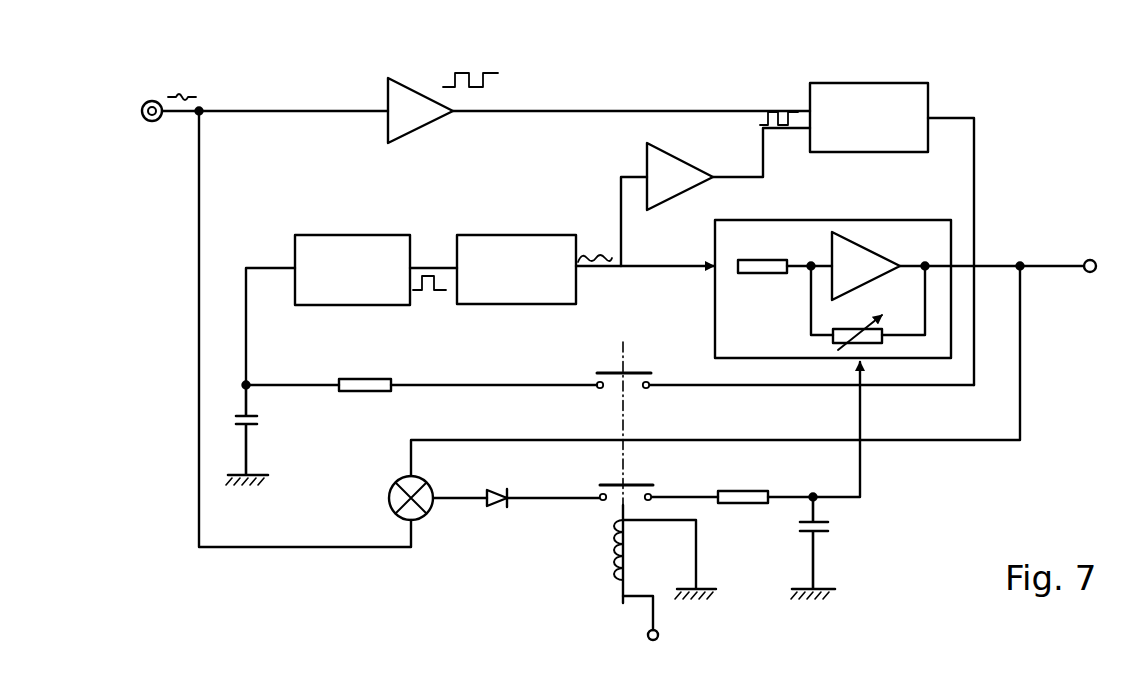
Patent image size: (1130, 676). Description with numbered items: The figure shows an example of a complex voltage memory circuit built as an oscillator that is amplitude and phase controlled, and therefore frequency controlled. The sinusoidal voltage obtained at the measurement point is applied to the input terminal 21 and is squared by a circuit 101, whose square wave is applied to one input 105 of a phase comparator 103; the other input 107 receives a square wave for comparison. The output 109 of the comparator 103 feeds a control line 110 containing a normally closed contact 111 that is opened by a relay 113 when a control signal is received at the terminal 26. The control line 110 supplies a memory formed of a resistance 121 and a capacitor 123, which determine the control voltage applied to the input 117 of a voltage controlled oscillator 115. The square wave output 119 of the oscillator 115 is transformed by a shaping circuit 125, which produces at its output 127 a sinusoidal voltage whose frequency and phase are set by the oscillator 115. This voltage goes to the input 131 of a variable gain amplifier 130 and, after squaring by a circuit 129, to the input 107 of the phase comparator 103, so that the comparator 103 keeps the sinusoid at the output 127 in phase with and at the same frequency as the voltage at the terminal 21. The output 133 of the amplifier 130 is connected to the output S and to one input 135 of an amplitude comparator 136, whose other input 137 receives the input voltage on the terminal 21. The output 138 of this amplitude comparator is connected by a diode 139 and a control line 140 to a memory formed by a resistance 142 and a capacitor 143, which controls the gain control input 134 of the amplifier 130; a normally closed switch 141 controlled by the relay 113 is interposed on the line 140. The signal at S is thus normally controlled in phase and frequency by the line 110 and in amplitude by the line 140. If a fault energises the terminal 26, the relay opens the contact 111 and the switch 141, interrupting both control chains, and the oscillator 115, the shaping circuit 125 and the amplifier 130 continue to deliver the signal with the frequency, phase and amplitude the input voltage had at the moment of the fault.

The input terminal 21 is at (144, 126).
The squaring circuit 101 is at (404, 78).
The phase comparator 103 is at (873, 83).
The phase comparator input 105 is at (806, 100).
The phase comparator input 107 is at (806, 131).
The comparator output 109 is at (934, 117).
The control line 110 is at (938, 386).
The normally closed contact 111 is at (629, 372).
The relay 113 is at (610, 563).
The voltage controlled oscillator 115 is at (338, 235).
The oscillator control input 117 is at (282, 266).
The VCO square wave output 119 is at (414, 268).
The resistance 121 is at (368, 378).
The capacitor 123 is at (260, 420).
The shaping circuit 125 is at (512, 235).
The shaping circuit output 127 is at (624, 271).
The squaring circuit 129 is at (688, 159).
The variable gain amplifier 130 is at (908, 220).
The amplifier input 131 is at (714, 264).
The amplifier output 133 is at (1028, 258).
The gain control input 134 is at (854, 384).
The amplitude comparator input 135 is at (408, 452).
The amplitude comparator 136 is at (389, 498).
The amplitude comparator input 137 is at (416, 524).
The amplitude comparator output 138 is at (454, 496).
The diode 139 is at (500, 490).
The control line 140 is at (586, 502).
The normally closed switch 141 is at (631, 486).
The resistance R142 142 is at (726, 490).
The capacitor C143 143 is at (828, 527).
The control input terminal 26 is at (660, 640).